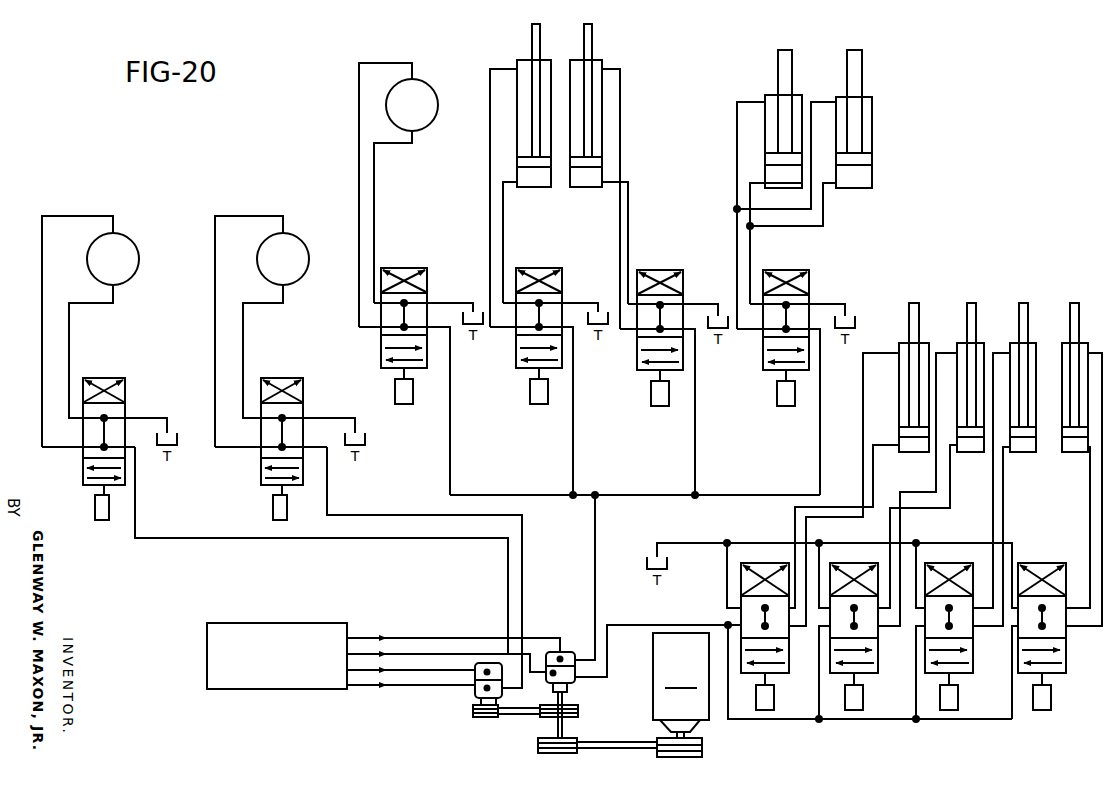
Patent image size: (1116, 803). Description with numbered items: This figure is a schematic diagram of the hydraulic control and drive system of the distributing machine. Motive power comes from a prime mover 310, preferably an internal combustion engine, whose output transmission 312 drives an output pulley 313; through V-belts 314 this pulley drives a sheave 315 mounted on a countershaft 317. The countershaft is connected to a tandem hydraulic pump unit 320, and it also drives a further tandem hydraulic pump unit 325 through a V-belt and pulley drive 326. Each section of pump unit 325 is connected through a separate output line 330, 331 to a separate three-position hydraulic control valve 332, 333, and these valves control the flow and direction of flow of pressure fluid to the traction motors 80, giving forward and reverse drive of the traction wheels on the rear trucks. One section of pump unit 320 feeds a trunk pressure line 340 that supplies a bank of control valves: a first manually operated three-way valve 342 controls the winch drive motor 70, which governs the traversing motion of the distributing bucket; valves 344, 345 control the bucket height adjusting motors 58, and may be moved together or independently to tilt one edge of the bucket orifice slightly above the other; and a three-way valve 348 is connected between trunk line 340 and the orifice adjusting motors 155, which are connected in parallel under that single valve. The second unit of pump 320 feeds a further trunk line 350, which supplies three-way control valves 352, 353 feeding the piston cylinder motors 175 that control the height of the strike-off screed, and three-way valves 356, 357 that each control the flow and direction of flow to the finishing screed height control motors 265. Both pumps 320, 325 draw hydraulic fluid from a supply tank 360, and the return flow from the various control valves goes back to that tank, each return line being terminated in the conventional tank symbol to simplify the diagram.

The bucket height adjusting motors 58 is at (578, 63).
The winch drive motor 70 is at (430, 87).
The traction motors 80 is at (131, 241).
The orifice adjusting motors 155 is at (842, 95).
The piston cylinder motors 175 is at (960, 342).
The finishing screed height control motors 265 is at (1068, 343).
The prime mover 310 is at (681, 676).
The output transmission 312 is at (698, 729).
The output pulley 313 is at (698, 757).
The V-belts 314 is at (626, 748).
The sheave 315 is at (546, 753).
The countershaft 317 is at (568, 723).
The tandem hydraulic pump unit 320 is at (560, 652).
The tandem hydraulic pump unit 325 is at (472, 692).
The V-belt and pulley drive 326 is at (522, 718).
The output line 330 is at (314, 540).
The output line 331 is at (395, 515).
The 3-position hydraulic control valve 332 is at (125, 407).
The 3-position hydraulic control valve 333 is at (303, 405).
The trunk pressure line 340 is at (633, 495).
The 3-way hydraulic valve 342 is at (421, 268).
The control valve 344 is at (565, 275).
The control valve 345 is at (686, 278).
The 3-way valve 348 is at (812, 280).
The trunk line 350 is at (672, 625).
The 3-way control valve 352 is at (762, 563).
The 3-way control valve 353 is at (857, 563).
The 3-way valve 356 is at (954, 563).
The 3-way valve 357 is at (1045, 563).
The supply tank 360 is at (284, 632).